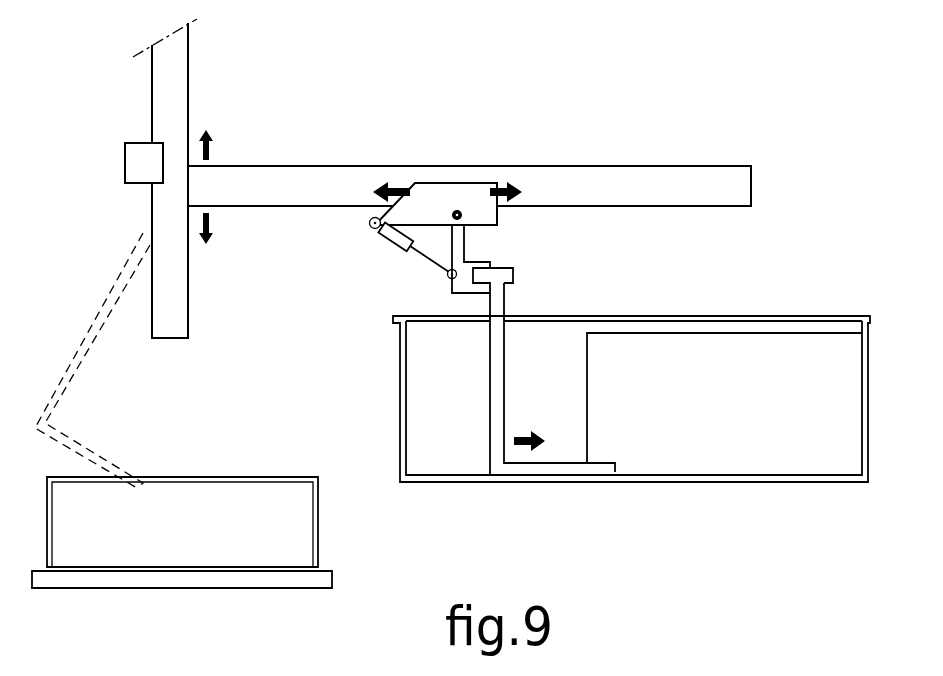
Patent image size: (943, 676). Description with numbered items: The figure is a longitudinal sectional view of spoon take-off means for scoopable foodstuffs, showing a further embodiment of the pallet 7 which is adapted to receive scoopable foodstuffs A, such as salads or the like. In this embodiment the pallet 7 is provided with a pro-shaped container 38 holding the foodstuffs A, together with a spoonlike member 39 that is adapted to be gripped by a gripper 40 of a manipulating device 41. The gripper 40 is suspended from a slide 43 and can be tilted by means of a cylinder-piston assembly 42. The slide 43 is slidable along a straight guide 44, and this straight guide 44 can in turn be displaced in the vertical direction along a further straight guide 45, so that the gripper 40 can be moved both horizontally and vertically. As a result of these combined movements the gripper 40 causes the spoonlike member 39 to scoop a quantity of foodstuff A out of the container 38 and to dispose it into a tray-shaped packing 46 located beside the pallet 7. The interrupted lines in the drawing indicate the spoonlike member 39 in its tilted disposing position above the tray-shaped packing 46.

The pallet 7 is at (549, 485).
The pro-shaped container 38 is at (400, 398).
The spoonlike member 39 is at (495, 425).
The gripper 40 is at (460, 248).
The manipulating device 41 is at (345, 148).
The cylinder-piston assembly 42 is at (392, 245).
The slide 43 is at (437, 205).
The straight guide 44 is at (655, 180).
The straight guide 45 is at (173, 85).
The tray-shaped packing 46 is at (319, 537).
The scoopable foodstuffs A is at (709, 425).